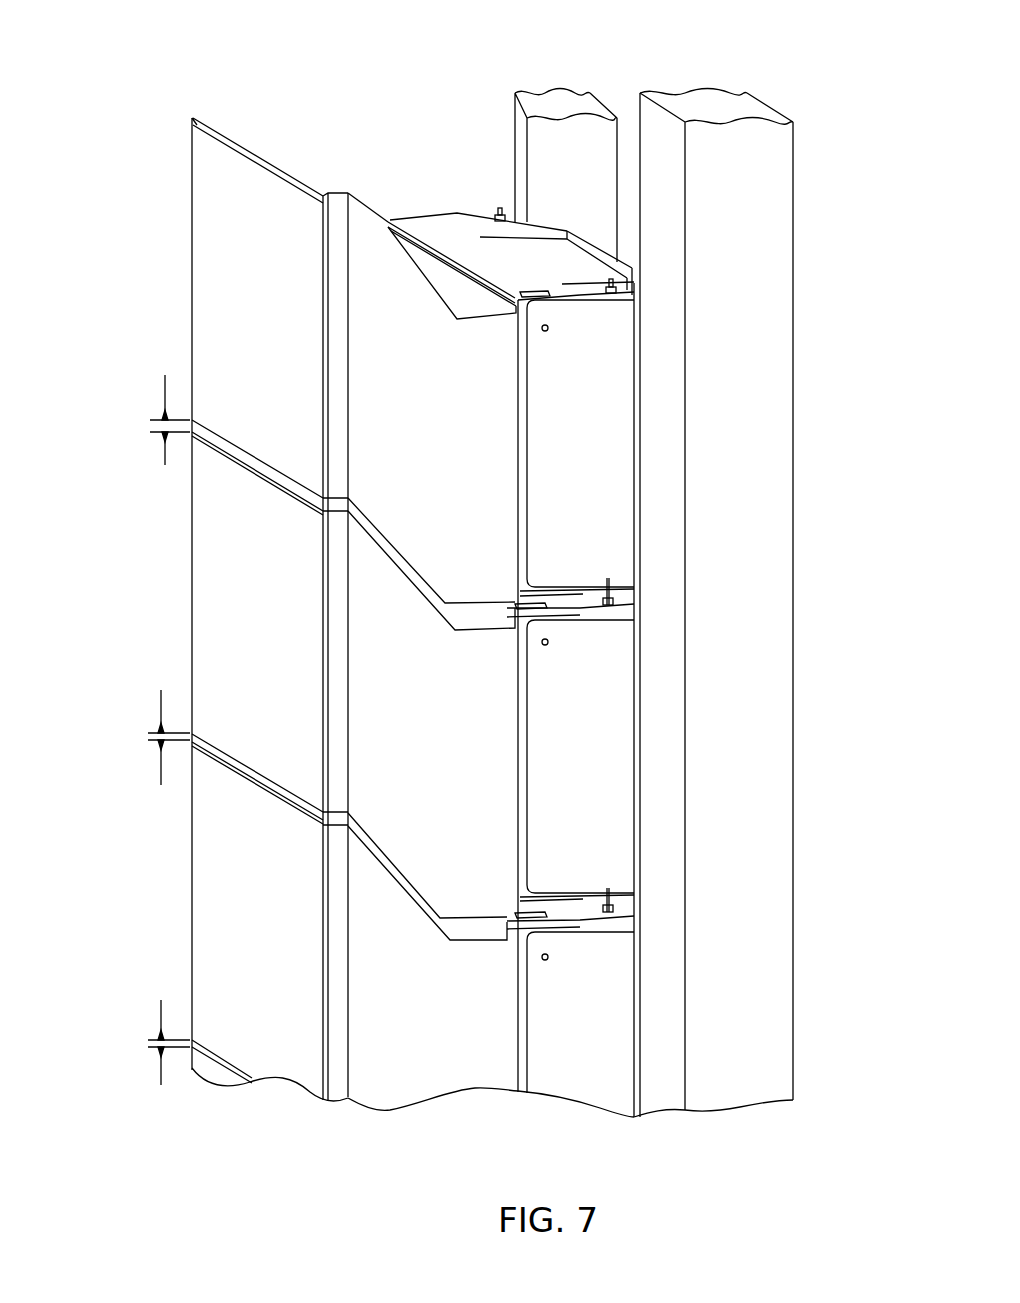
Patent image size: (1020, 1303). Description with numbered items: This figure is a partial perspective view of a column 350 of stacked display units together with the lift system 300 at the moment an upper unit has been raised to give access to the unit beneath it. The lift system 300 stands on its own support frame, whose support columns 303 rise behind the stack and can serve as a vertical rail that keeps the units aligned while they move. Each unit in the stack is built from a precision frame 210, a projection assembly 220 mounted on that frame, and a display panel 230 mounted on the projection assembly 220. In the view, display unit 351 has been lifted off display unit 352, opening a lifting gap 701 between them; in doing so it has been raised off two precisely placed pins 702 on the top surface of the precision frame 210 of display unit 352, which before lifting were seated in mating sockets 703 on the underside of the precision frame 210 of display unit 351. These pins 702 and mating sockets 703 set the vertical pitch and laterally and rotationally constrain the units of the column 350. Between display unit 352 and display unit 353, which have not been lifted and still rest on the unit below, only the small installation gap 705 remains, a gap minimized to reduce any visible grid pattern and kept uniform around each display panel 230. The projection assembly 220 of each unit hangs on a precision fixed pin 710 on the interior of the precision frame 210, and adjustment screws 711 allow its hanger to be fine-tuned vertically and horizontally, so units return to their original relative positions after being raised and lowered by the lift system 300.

The lift system 300 is at (720, 66).
The support columns 303 is at (594, 182).
The column 350 is at (352, 76).
The display unit 351 is at (163, 246).
The display unit 352 is at (148, 611).
The display unit 353 is at (150, 929).
The precision frame 210 is at (601, 456).
The projection assembly 220 is at (448, 436).
The display panel 230 is at (273, 286).
The lifting gap 701 is at (150, 419).
The pins 702 is at (499, 209).
The mating sockets 703 is at (606, 579).
The installation gap 705 is at (148, 738).
The precision fixed pin 710 is at (551, 335).
The adjustment screws 711 is at (415, 212).